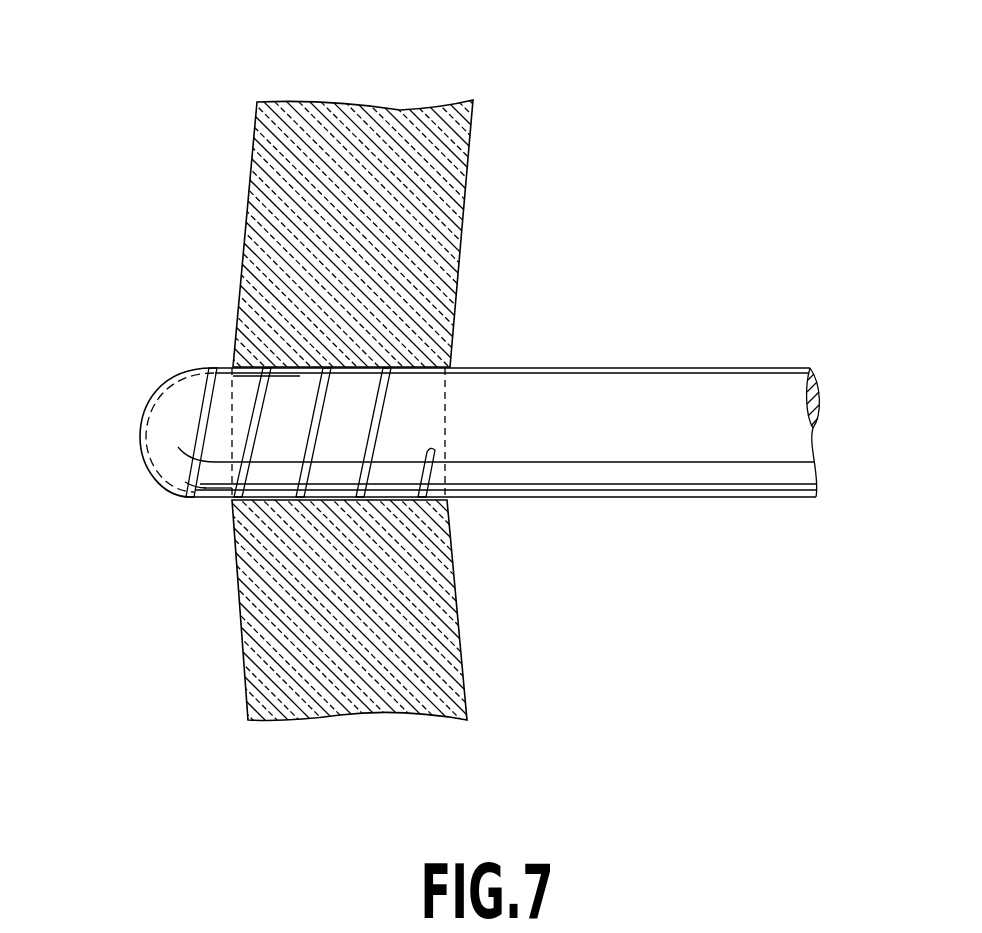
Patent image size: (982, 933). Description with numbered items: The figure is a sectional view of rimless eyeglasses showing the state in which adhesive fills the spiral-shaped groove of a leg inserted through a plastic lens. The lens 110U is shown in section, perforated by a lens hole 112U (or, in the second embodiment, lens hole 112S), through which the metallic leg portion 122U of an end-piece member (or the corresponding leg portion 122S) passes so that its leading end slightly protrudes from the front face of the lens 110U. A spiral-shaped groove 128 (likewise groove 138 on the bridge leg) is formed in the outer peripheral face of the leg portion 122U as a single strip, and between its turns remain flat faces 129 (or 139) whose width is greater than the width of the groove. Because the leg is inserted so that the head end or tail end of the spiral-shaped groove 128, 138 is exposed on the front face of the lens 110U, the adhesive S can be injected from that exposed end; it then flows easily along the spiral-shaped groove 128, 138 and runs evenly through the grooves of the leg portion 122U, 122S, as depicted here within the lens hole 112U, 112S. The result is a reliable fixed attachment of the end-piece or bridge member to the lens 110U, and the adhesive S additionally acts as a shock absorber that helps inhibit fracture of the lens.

The lens 110U is at (358, 114).
The lens hole 112U is at (427, 397).
The lens hole 112S is at (430, 378).
The leg portion 122U is at (479, 482).
The leg portion 122S is at (655, 484).
The spiral-shaped groove 128 is at (232, 388).
The spiral-shaped groove 138 is at (213, 370).
The flat face 129 is at (255, 527).
The flat face 139 is at (232, 502).
The adhesive S is at (298, 368).